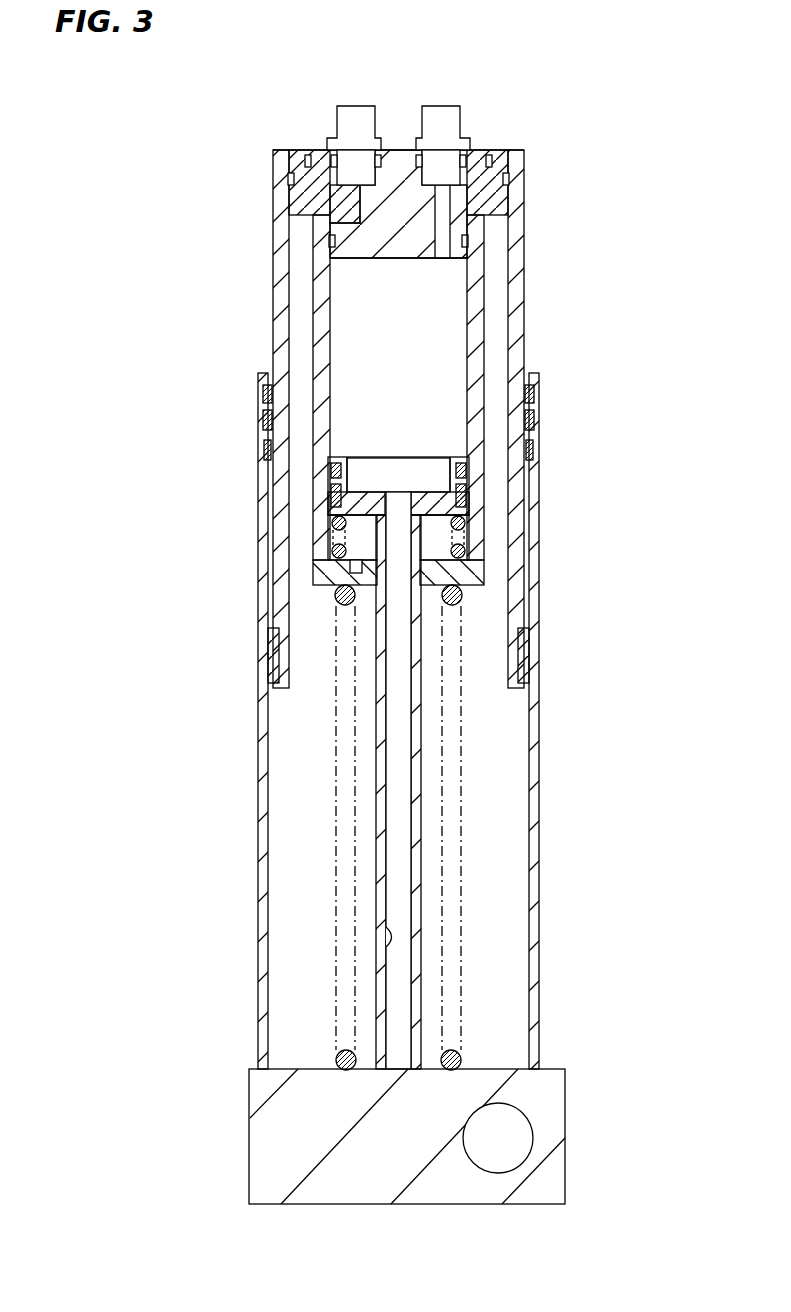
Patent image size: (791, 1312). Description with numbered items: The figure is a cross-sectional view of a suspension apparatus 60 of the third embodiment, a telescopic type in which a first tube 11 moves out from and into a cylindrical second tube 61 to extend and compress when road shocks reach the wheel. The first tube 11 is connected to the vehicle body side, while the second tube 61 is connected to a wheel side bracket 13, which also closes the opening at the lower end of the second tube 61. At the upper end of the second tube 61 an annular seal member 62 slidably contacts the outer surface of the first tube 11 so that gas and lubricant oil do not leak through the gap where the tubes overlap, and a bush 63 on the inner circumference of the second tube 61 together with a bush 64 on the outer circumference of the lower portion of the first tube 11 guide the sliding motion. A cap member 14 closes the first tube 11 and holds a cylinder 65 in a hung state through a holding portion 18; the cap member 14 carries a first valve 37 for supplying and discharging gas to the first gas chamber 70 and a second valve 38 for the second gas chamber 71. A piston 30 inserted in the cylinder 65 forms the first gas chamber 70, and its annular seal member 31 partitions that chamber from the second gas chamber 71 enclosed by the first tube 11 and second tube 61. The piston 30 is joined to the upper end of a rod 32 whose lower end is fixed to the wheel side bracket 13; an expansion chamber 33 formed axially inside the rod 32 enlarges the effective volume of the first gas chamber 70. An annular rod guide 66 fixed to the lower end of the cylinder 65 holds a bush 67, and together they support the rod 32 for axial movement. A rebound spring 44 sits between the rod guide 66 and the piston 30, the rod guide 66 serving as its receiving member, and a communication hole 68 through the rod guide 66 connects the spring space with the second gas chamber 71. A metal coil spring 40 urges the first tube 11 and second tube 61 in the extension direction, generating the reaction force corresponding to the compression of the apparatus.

The suspension apparatus 60 is at (647, 161).
The first tube 11 is at (516, 330).
The wheel side bracket 13 is at (555, 1172).
The cap member 14 is at (395, 237).
The holding portion 18 is at (506, 195).
The piston 30 is at (461, 460).
The seal member 31 is at (467, 496).
The rod 32 is at (417, 880).
The expansion chamber 33 is at (385, 940).
The first valve 37 is at (450, 122).
The second valve 38 is at (348, 125).
The coil spring 40 is at (461, 1063).
The rebound spring 44 is at (338, 521).
The second tube 61 is at (540, 820).
The seal member 62 is at (262, 422).
The bush 63 is at (262, 452).
The bush 64 is at (530, 656).
The cylinder 65 is at (473, 336).
The rod guide 66 is at (471, 577).
The bush 67 is at (423, 578).
The communication hole 68 is at (360, 575).
The first gas chamber 70 is at (356, 340).
The second gas chamber 71 is at (364, 900).